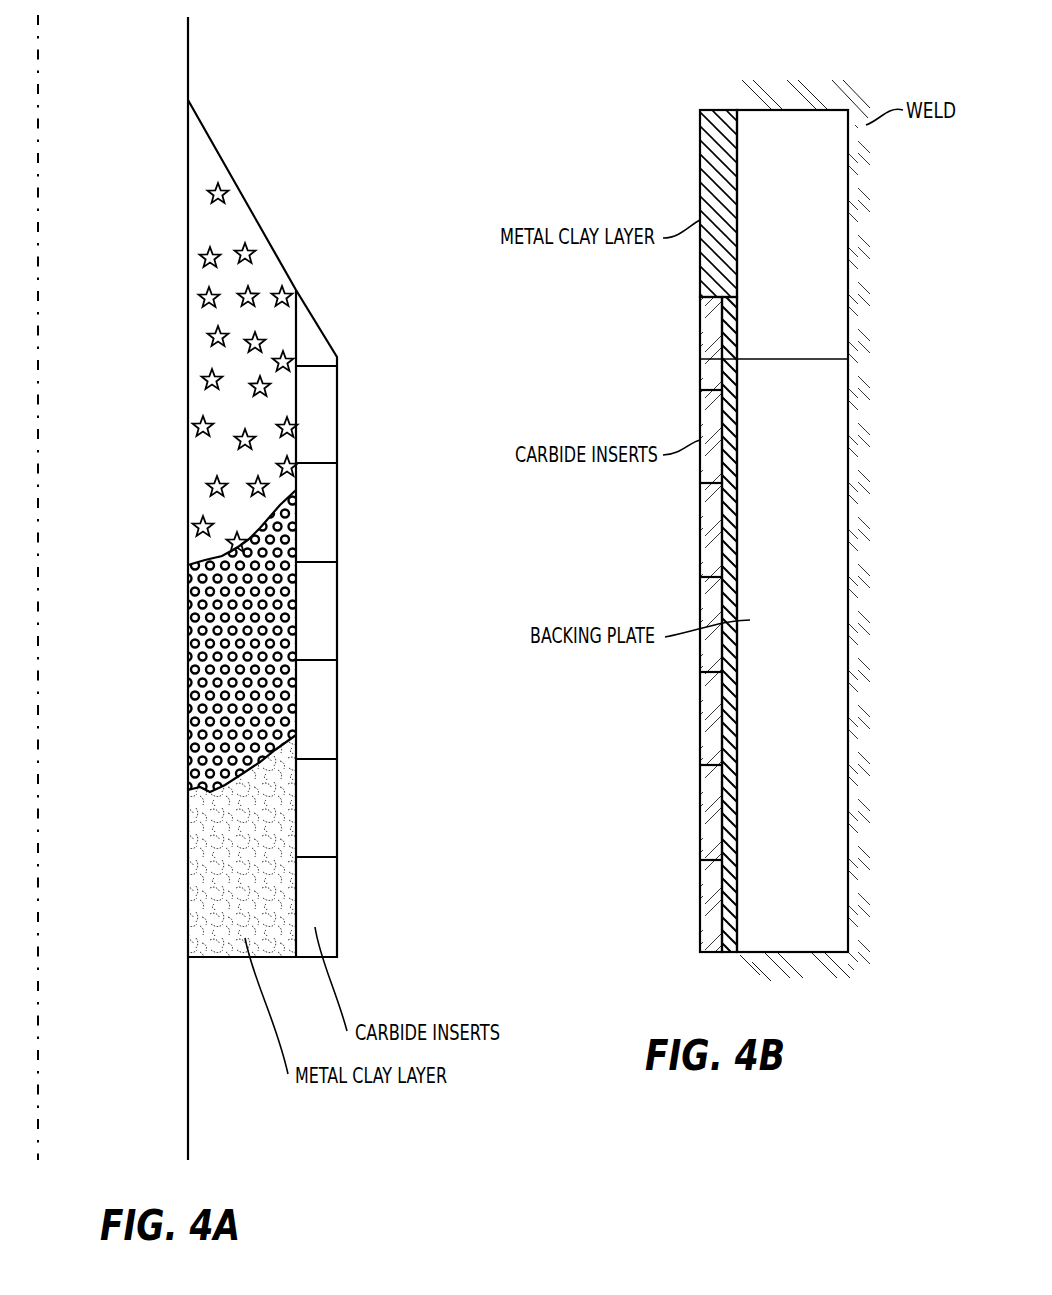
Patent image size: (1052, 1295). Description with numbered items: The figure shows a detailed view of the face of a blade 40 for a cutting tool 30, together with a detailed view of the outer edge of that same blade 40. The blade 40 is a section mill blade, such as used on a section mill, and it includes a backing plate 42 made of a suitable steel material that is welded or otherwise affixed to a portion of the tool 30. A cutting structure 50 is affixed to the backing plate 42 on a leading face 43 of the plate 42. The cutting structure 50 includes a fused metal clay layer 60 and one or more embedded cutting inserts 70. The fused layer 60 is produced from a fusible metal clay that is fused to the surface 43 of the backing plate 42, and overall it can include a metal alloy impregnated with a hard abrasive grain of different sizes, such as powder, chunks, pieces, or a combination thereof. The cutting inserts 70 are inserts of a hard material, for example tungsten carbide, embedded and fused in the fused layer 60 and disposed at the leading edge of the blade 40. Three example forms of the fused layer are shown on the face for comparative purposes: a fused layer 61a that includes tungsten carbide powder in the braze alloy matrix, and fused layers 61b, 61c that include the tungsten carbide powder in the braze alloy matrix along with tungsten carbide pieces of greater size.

In FIG. 4A, the cutting tool 30 is at (188, 43).
In FIG. 4B, the cutting tool 30 is at (779, 92).
In FIG. 4A, the blade 40 is at (331, 131).
In FIG. 4A, the cutting structure 50 is at (350, 575).
In FIG. 4B, the cutting structure 50 is at (728, 624).
In FIG. 4A, the fused metal clay layer 60 is at (182, 570).
In FIG. 4B, the fused metal clay layer 60 is at (712, 164).
In FIG. 4A, the fused layer 61a is at (200, 850).
In FIG. 4A, the fused layer 61b is at (198, 627).
In FIG. 4A, the fused layer 61c is at (203, 352).
In FIG. 4A, the cutting inserts 70 is at (337, 448).
In FIG. 4B, the cutting inserts 70 is at (700, 562).
In FIG. 4B, the backing plate 42 is at (830, 835).
In FIG. 4B, the leading face 43 is at (720, 824).